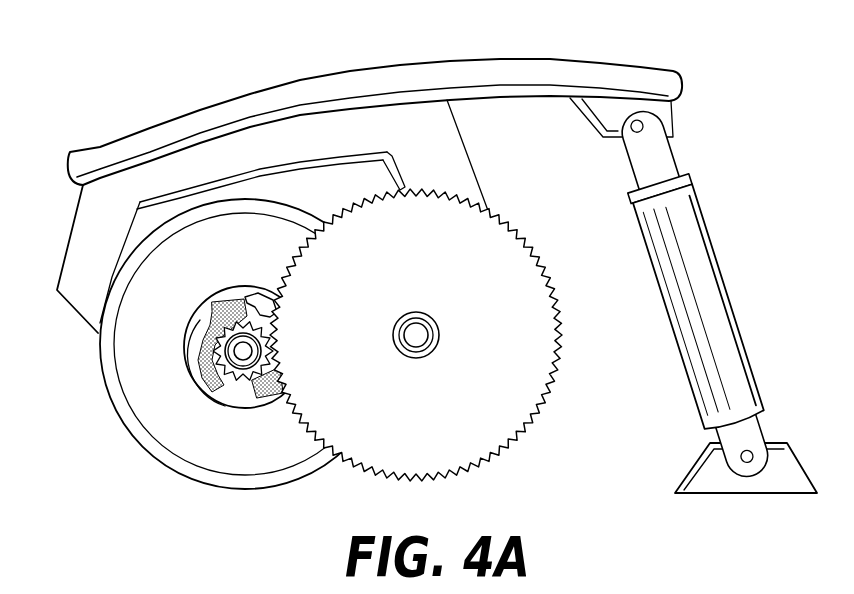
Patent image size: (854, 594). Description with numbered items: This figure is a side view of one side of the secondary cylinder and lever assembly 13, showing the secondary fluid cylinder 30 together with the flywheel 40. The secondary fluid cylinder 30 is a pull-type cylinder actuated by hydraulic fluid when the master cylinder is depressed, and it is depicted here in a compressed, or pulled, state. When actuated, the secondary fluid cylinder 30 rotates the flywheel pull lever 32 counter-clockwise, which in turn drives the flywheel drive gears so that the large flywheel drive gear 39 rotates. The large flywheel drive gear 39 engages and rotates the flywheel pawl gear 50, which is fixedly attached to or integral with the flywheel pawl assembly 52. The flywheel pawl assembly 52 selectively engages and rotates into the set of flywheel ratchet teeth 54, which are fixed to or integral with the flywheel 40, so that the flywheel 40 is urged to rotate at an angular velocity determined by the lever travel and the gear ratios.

The secondary cylinder and lever assembly 13 is at (100, 104).
The secondary fluid cylinder 30 is at (727, 297).
The flywheel pull lever 32 is at (520, 72).
The large flywheel drive gear 39 is at (527, 402).
The flywheel 40 is at (123, 372).
The flywheel pawl gear 50 is at (232, 383).
The flywheel pawl assembly 52 is at (222, 392).
The flywheel ratchet teeth 54 is at (197, 329).